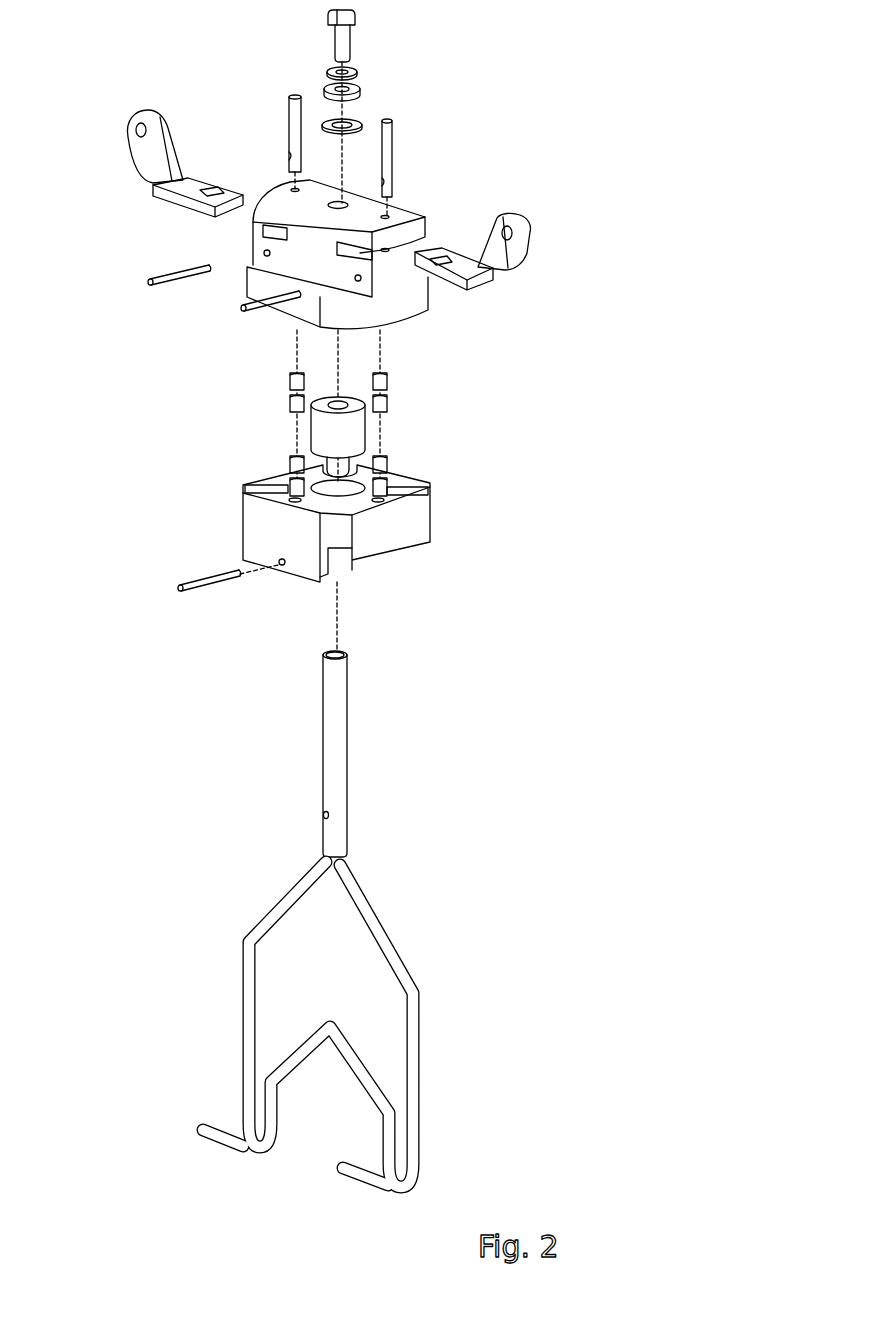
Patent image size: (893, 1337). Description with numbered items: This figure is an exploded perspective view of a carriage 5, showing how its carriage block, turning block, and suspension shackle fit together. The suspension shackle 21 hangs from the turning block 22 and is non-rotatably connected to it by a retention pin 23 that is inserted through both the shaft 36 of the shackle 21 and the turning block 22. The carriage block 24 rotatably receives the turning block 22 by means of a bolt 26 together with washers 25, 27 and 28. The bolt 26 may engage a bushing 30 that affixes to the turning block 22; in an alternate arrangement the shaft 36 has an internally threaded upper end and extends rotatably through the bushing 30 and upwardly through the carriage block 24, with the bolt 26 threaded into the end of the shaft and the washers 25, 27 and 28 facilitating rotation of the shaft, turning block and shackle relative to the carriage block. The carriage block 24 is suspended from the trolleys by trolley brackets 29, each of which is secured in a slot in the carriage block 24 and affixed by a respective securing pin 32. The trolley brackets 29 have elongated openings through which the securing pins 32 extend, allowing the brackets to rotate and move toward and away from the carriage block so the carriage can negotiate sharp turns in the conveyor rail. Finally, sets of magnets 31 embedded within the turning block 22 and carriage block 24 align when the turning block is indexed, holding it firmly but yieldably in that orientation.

The carriage 5 is at (126, 392).
The suspension shackle 21 is at (420, 1032).
The turning block 22 is at (257, 530).
The retention pin 23 is at (200, 575).
The carriage block 24 is at (410, 308).
The washer 25 is at (356, 84).
The bolt 26 is at (352, 42).
The washer 27 is at (344, 71).
The washer 28 is at (358, 118).
The trolley bracket 29 is at (190, 187).
The bushing 30 is at (352, 433).
The magnets 31 is at (387, 475).
The securing pin 32 is at (393, 147).
The shaft 36 is at (342, 752).